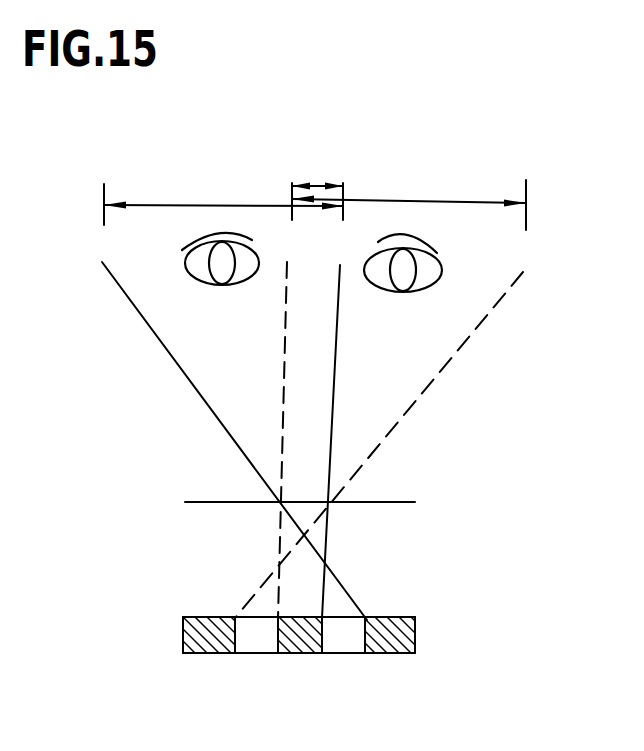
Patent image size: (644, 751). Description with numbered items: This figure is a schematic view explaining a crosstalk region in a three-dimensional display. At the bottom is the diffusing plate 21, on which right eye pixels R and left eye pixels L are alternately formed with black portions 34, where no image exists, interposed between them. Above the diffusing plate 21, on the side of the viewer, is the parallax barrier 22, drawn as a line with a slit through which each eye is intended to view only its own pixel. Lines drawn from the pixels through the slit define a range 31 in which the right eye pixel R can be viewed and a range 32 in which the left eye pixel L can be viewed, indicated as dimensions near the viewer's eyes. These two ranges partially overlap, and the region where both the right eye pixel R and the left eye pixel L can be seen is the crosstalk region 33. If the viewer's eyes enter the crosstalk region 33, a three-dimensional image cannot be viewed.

The diffusing plate 21 is at (398, 618).
The parallax barrier 22 is at (413, 502).
The range in which the right eye pixel can be viewed 31 is at (197, 205).
The range in which the left eye pixel can be viewed 32 is at (443, 203).
The crosstalk region 33 is at (319, 186).
The black portions 34 is at (295, 653).